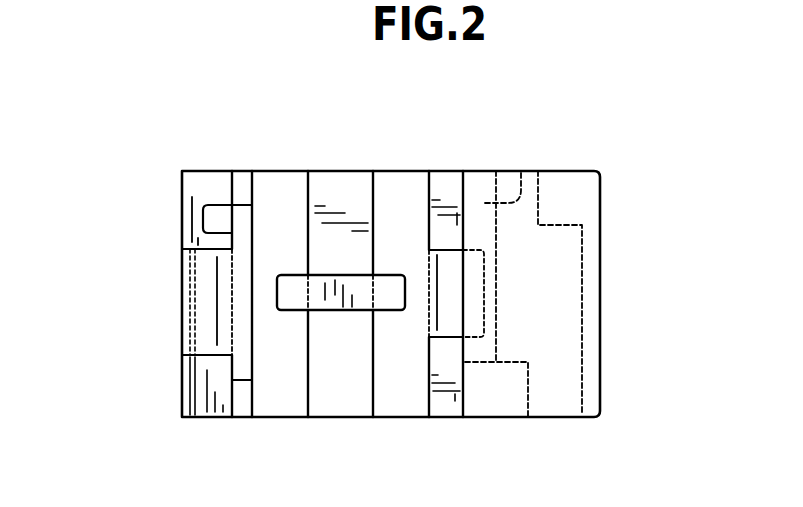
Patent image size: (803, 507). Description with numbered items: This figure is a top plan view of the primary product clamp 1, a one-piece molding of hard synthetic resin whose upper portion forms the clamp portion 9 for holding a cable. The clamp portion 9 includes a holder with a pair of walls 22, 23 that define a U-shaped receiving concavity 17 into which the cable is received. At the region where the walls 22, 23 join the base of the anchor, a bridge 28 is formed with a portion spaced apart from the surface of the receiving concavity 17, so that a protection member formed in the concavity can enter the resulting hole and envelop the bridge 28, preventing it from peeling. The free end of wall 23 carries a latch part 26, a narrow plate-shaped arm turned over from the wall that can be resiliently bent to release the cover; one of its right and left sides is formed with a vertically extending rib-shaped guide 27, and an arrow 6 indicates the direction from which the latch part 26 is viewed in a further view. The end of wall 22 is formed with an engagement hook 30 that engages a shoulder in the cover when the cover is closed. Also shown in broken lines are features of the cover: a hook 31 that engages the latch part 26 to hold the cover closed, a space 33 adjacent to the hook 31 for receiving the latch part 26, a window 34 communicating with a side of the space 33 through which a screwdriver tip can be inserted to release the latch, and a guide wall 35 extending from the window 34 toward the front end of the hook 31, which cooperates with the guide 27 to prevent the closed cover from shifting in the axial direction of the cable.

The primary product clamp 1 is at (443, 153).
The arrow 6 is at (133, 292).
The clamp portion 9 is at (393, 423).
The receiving concavity 17 is at (358, 362).
The wall 22 is at (398, 210).
The wall 23 is at (277, 208).
The latch part 26 is at (203, 320).
The guide 27 is at (215, 222).
The bridge 28 is at (323, 299).
The engagement hook 30 is at (447, 292).
The hook 31 is at (522, 171).
The space 33 is at (513, 309).
The window 34 is at (557, 418).
The guide wall 35 is at (492, 418).